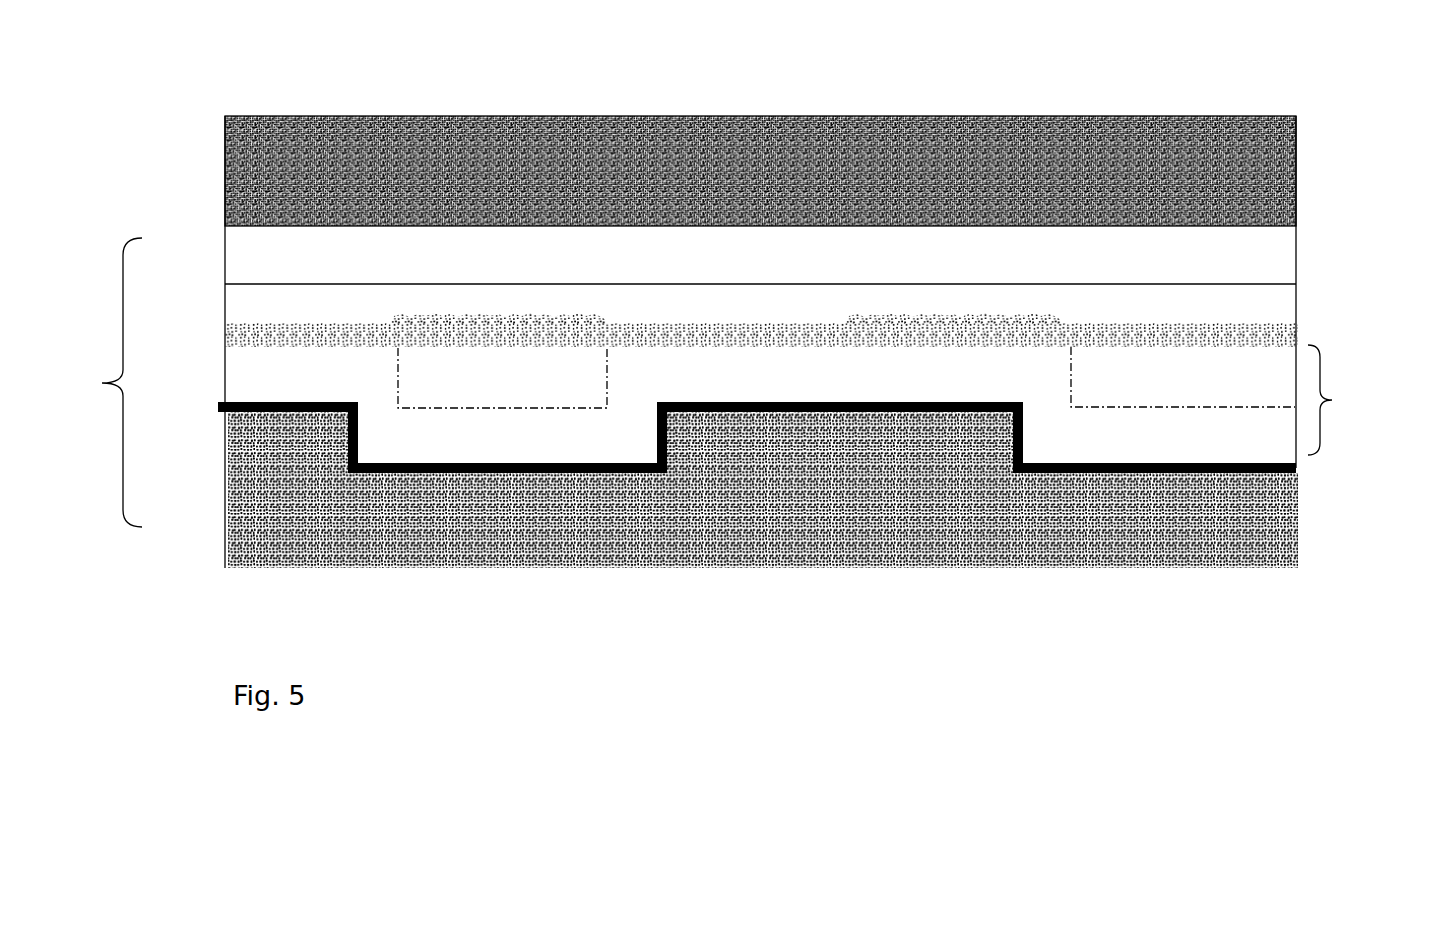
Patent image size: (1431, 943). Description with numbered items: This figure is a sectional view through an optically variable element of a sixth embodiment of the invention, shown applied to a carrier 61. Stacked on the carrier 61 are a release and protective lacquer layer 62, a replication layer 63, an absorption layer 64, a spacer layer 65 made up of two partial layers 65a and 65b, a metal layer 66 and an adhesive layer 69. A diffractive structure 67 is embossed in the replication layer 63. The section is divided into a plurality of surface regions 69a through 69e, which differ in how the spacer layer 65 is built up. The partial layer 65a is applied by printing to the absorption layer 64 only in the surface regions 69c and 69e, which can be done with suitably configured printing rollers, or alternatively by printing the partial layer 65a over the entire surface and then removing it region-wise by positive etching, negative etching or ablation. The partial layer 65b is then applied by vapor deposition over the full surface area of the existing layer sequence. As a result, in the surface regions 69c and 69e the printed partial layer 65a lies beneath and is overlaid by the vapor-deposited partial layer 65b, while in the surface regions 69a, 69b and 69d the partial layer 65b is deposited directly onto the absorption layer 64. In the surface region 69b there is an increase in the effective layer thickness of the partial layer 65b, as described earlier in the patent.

The carrier 61 is at (1257, 180).
The release and protective lacquer layer 62 is at (262, 269).
The replication layer 63 is at (1250, 303).
The absorption layer 64 is at (262, 341).
The spacer layer 65 is at (1342, 400).
The partial layer 65a is at (452, 372).
The partial layer 65b is at (1083, 437).
The metal layer 66 is at (297, 410).
The diffractive structure 67 is at (512, 310).
The adhesive layer 69 is at (1217, 502).
The surface region 69a is at (291, 517).
The surface region 69b is at (373, 517).
The surface region 69c is at (516, 517).
The surface region 69d is at (939, 518).
The surface region 69e is at (1210, 520).